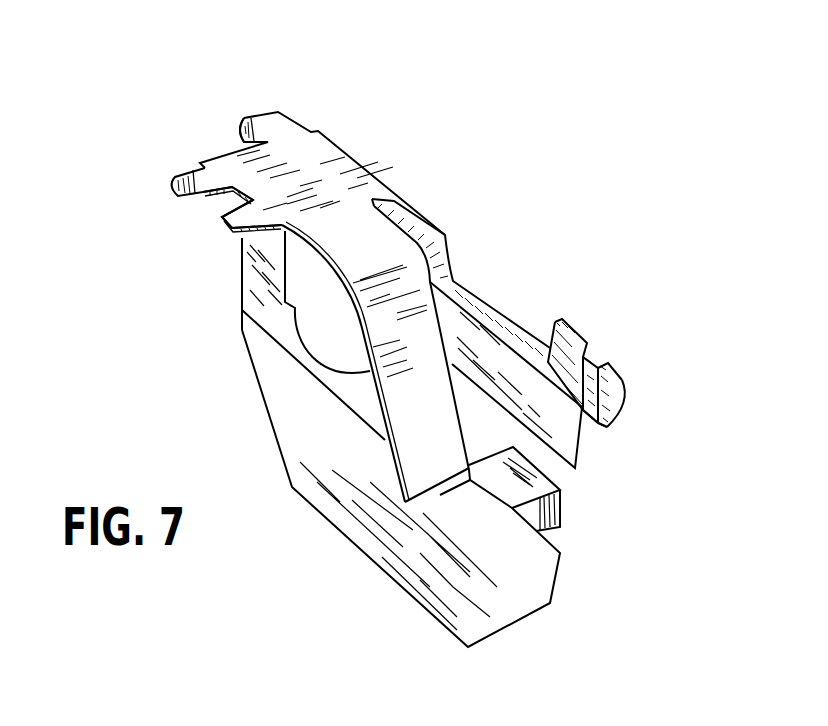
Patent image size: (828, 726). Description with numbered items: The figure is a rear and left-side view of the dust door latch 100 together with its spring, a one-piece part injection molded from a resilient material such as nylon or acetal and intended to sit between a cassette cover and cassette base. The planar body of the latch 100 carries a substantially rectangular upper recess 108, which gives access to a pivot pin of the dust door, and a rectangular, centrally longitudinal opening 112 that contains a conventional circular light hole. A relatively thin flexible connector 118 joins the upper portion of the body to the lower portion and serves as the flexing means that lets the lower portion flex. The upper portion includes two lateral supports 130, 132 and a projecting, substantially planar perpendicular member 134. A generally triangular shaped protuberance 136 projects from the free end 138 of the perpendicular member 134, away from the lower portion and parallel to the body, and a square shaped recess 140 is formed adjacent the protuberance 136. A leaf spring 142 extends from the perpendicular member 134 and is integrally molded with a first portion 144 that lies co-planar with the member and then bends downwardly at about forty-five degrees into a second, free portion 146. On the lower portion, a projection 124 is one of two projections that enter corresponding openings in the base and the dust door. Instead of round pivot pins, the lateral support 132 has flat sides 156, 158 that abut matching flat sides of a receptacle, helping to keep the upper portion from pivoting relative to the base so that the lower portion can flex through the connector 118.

The dust door latch 100 is at (547, 140).
The upper recess 108 is at (455, 280).
The centrally longitudinal opening 112 is at (436, 488).
The flexible connector 118 is at (240, 293).
The projection 124 is at (555, 508).
The lateral support 130 is at (268, 121).
The lateral support 132 is at (573, 390).
The perpendicular member 134 is at (347, 187).
The triangular shaped protuberance 136 is at (172, 185).
The free end 138 is at (233, 240).
The square shaped recess 140 is at (217, 197).
The leaf spring 142 is at (345, 449).
The first portion 144 is at (362, 258).
The second, free portion 146 is at (459, 483).
The flat side 156 is at (617, 374).
The flat side 158 is at (595, 425).